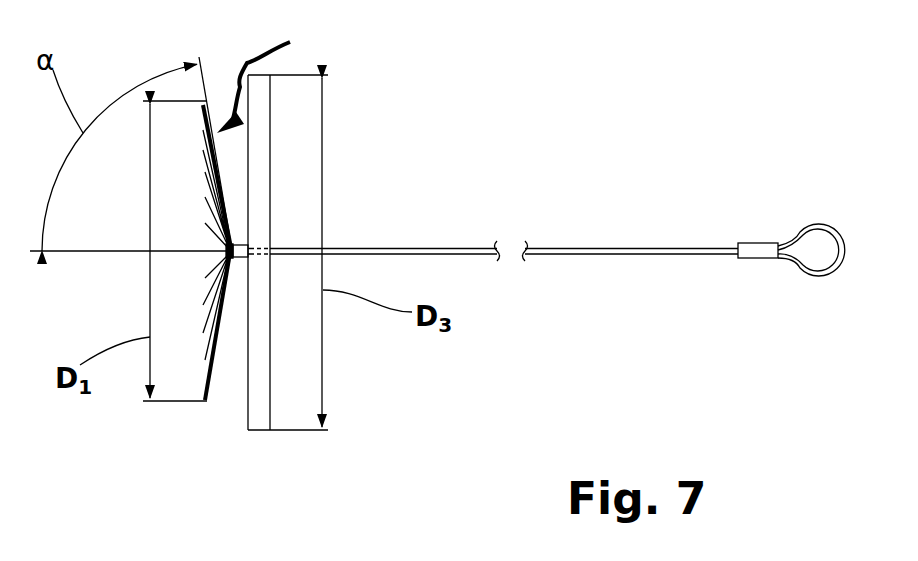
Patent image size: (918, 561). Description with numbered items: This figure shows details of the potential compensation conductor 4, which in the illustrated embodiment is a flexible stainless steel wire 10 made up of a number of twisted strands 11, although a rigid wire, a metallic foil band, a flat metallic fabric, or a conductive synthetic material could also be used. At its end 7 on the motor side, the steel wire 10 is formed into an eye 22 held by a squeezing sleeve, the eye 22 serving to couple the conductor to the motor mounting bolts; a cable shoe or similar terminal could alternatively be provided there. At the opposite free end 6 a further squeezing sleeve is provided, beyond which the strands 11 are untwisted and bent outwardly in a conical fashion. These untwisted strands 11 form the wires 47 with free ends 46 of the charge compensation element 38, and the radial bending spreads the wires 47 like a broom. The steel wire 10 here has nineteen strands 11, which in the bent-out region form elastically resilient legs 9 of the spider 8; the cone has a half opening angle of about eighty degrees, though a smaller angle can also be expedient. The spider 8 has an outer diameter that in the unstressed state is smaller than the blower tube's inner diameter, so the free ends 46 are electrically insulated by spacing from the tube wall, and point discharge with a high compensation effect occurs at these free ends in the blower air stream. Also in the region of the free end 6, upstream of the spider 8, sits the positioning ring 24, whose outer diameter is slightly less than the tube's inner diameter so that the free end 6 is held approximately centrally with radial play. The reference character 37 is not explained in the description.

The potential compensation conductor 4 is at (573, 165).
The free end of the potential compensation conductor 6 is at (247, 237).
The end on the motor side 7 is at (752, 217).
The spider 8 is at (228, 160).
The elastically resilient legs of the spider 9 is at (208, 117).
The flexible stainless steel wire 10 is at (447, 247).
The twisted strands 11 is at (213, 238).
The eye 22 is at (822, 238).
The positioning ring 24 is at (258, 393).
The brush head 37 is at (423, 148).
The charge compensation element 38 is at (266, 75).
The free ends 46 is at (207, 402).
The wires 47 is at (203, 263).